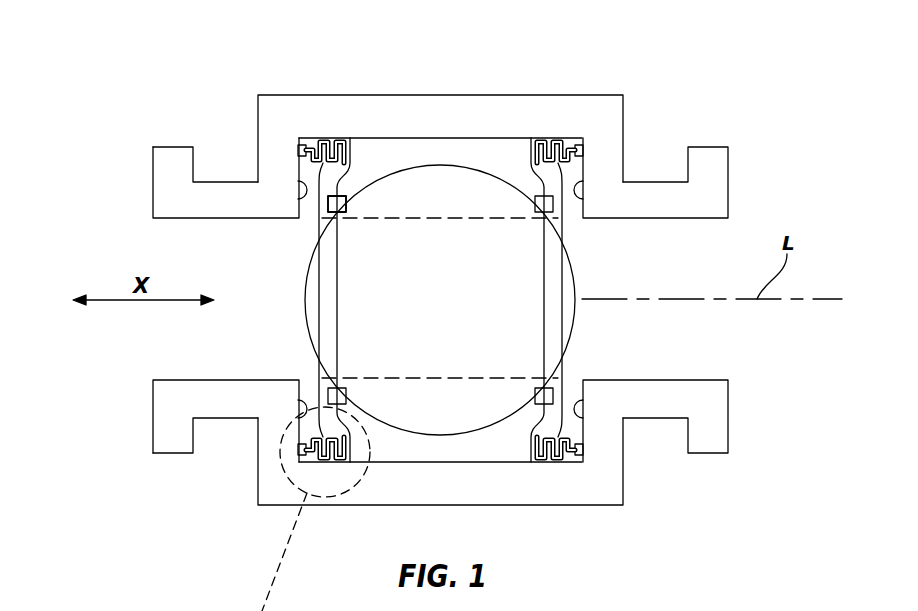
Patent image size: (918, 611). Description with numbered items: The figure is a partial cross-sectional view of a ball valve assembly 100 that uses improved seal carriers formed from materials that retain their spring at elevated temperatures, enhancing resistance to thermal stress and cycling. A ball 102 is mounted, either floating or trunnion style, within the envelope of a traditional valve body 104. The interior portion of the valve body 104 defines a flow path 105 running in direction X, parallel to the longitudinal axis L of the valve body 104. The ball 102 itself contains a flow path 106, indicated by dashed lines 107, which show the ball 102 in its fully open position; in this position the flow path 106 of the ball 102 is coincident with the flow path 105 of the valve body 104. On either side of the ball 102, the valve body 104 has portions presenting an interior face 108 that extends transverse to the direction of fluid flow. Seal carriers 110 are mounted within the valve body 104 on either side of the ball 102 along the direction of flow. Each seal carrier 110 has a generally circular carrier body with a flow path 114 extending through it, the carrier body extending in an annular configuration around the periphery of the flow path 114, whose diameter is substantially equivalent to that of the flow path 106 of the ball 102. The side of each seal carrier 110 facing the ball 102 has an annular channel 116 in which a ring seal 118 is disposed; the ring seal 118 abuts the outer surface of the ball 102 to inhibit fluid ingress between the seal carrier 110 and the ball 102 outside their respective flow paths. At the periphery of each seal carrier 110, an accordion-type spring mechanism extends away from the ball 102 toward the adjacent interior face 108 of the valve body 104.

The ball valve assembly 100 is at (160, 74).
The ball 102 is at (455, 182).
The valve body 104 is at (342, 105).
The flow path 105 is at (207, 380).
The flow path 106 is at (462, 311).
The dashed lines 107 is at (375, 219).
The interior face 108 is at (305, 192).
The seal carrier 110 is at (328, 392).
The flow path 114 is at (327, 297).
The annular channel 116 is at (345, 212).
The ring seal 118 is at (340, 197).